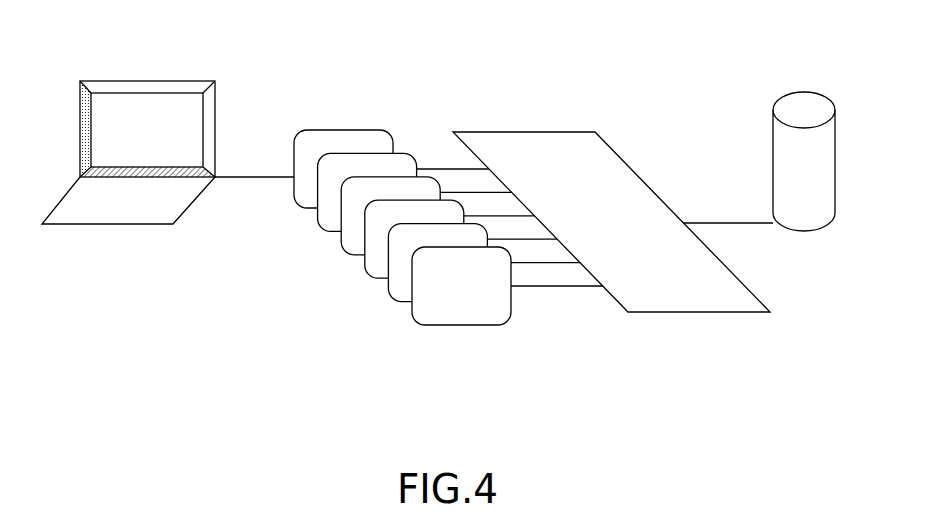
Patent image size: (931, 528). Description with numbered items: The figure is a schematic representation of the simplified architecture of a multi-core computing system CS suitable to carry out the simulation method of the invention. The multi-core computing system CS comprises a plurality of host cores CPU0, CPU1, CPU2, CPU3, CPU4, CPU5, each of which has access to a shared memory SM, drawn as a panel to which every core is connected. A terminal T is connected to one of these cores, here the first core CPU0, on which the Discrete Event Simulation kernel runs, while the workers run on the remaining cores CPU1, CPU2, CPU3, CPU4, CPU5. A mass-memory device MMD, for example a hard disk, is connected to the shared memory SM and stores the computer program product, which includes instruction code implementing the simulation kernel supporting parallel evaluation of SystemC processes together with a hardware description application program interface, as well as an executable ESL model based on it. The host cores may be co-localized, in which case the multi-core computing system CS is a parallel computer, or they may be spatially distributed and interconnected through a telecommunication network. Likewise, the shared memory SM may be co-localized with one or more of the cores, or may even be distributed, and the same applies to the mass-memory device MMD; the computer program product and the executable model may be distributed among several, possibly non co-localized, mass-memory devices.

The multi-core computing system CS is at (430, 47).
The terminal T is at (138, 80).
The host core CPU0 is at (310, 128).
The host core CPU1 is at (318, 220).
The host core CPU2 is at (342, 248).
The host core CPU3 is at (366, 280).
The host core CPU4 is at (394, 303).
The host core CPU5 is at (418, 325).
The shared memory SM is at (510, 131).
The mass-memory device MMD is at (800, 92).